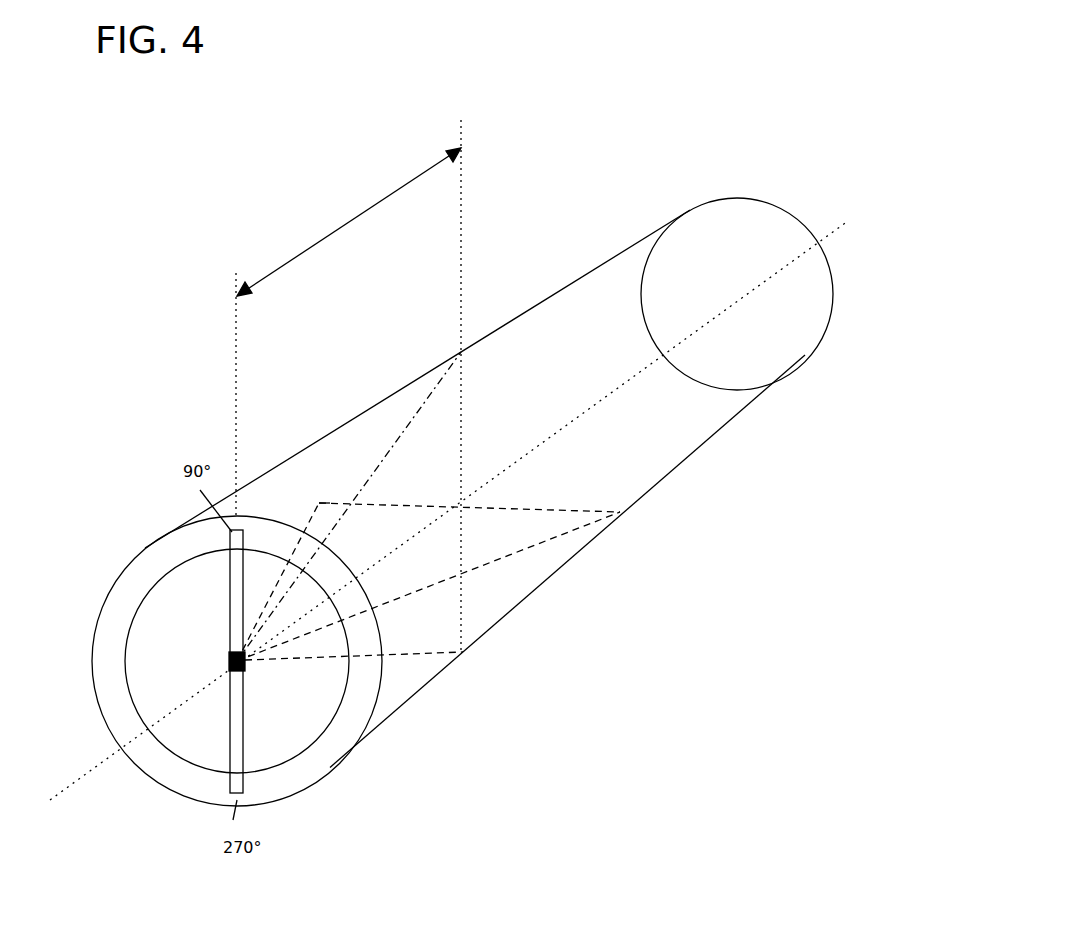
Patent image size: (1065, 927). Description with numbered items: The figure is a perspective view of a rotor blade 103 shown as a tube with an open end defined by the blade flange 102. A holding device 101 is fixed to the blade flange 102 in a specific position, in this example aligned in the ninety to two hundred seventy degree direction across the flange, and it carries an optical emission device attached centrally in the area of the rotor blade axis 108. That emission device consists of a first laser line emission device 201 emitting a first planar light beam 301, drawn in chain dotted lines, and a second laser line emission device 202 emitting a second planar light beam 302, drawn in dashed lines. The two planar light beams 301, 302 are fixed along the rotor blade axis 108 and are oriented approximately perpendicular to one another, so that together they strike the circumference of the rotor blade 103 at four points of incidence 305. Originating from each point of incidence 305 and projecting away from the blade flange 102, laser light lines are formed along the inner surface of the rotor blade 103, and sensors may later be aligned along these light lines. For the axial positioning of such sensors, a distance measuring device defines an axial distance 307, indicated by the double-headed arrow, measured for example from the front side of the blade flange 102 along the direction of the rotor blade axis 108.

The holding device 101 is at (235, 590).
The blade flange 102 is at (298, 772).
The rotor blade 103 is at (500, 328).
The rotor blade axis 108 is at (110, 770).
The first laser line emission device 201 is at (245, 673).
The second laser line emission device 202 is at (228, 662).
The first planar light beam 301 is at (445, 433).
The second planar light beam 302 is at (512, 517).
The point of incidence 305 is at (460, 350).
The axial distance 307 is at (330, 233).